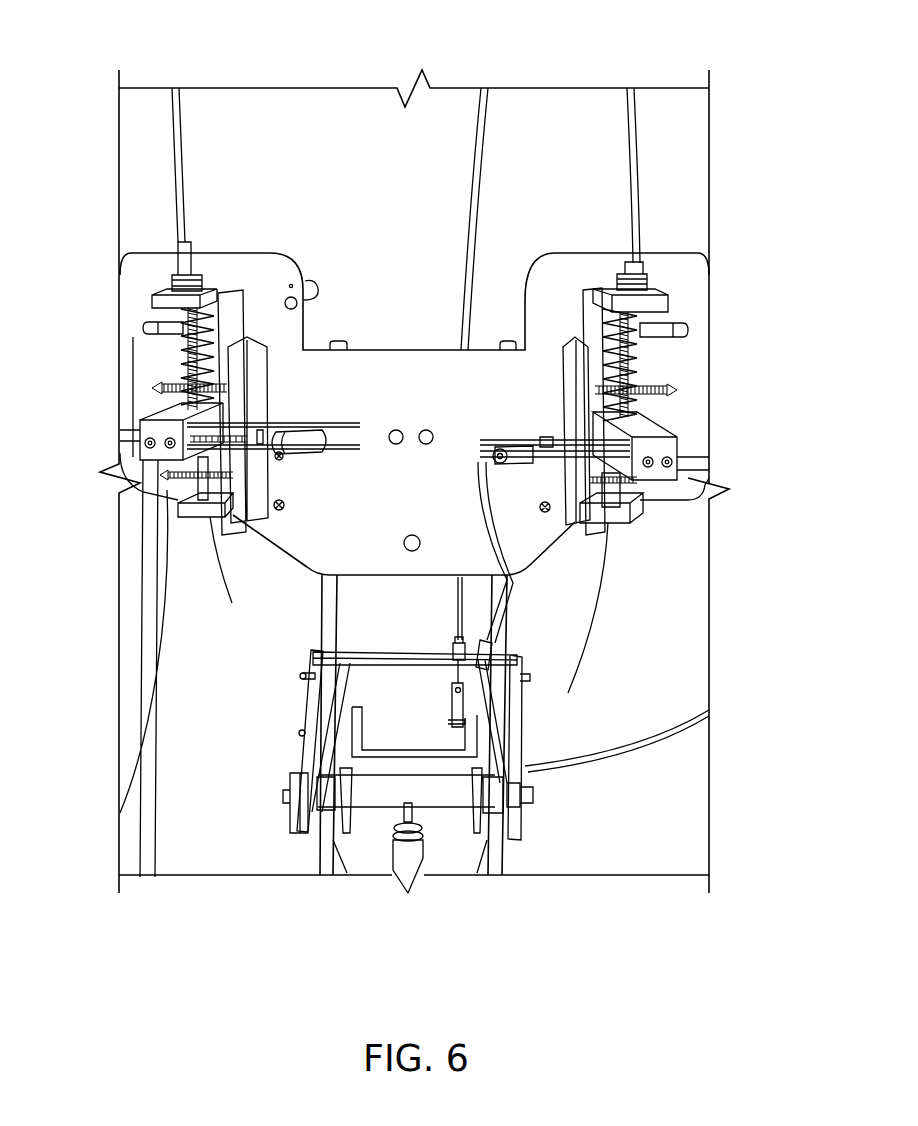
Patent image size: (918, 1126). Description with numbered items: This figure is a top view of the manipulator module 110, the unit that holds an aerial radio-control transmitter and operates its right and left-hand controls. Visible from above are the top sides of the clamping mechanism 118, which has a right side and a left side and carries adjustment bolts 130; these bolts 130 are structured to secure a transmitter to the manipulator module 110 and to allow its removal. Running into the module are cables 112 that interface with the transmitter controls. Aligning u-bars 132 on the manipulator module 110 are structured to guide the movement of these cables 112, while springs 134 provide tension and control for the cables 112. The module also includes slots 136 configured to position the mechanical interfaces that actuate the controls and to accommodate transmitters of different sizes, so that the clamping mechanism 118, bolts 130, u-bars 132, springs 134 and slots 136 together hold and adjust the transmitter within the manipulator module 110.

The manipulator module 110 is at (649, 45).
The cables 112 is at (176, 158).
The clamping mechanism 118 is at (244, 308).
The adjustment bolts 130 is at (152, 388).
The aligning u-bars 132 is at (343, 421).
The springs 134 is at (212, 293).
The slots 136 is at (145, 327).